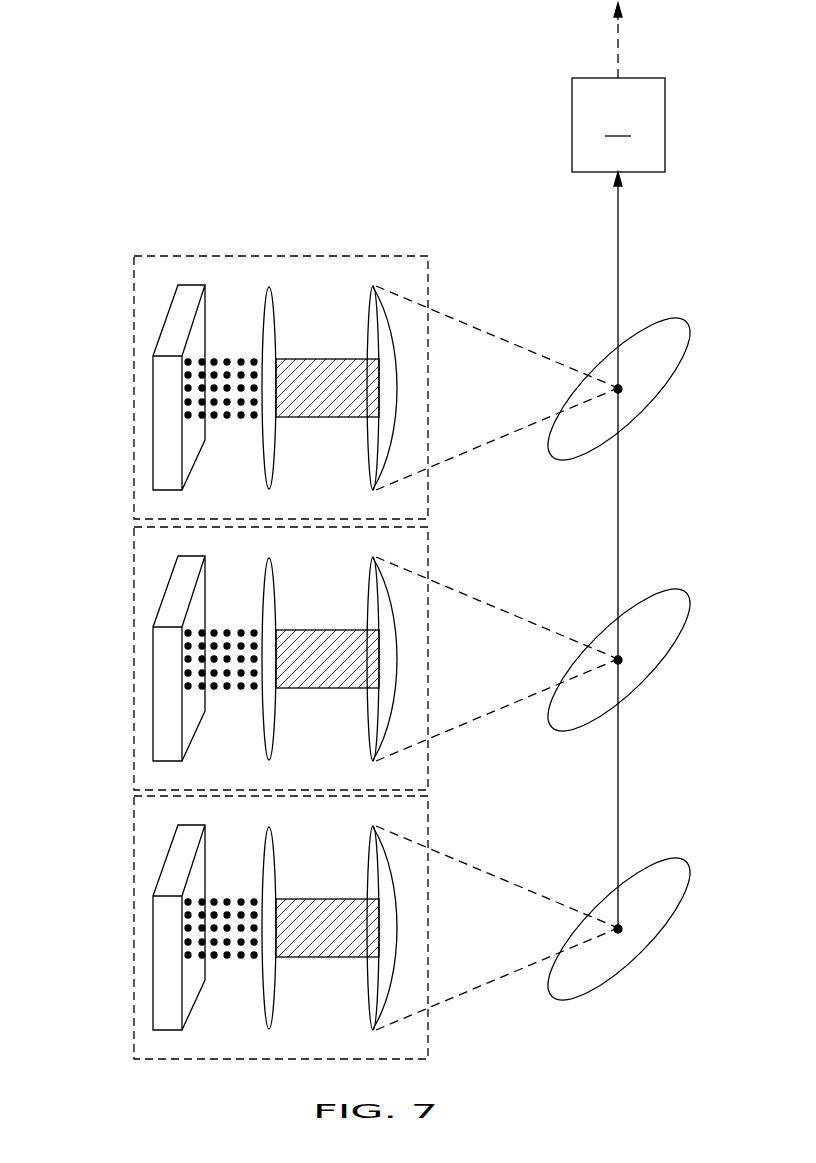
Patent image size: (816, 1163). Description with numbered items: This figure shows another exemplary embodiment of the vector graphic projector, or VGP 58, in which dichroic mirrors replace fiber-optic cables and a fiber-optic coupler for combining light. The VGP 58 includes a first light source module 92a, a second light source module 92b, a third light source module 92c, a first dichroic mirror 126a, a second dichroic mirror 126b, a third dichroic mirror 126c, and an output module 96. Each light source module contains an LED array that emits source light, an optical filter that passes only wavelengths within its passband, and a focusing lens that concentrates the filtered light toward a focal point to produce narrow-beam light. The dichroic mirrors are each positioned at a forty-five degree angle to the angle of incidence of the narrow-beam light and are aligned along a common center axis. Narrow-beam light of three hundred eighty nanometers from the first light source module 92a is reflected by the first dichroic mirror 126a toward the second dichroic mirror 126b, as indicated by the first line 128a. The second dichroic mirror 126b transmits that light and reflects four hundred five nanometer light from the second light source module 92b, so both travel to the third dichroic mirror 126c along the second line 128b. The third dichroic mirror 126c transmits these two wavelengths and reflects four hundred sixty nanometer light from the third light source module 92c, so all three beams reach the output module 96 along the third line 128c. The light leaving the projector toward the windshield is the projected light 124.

The VGP 58 is at (190, 161).
The first light source module 92a is at (232, 927).
The second light source module 92b is at (232, 658).
The third light source module 92c is at (118, 378).
The output module 96 is at (618, 125).
The projected light 124 is at (619, 42).
The first dichroic mirror 126a is at (599, 936).
The second dichroic mirror 126b is at (599, 667).
The third dichroic mirror 126c is at (574, 440).
The first line 128a is at (620, 805).
The second line 128b is at (620, 533).
The third line 128c is at (620, 271).